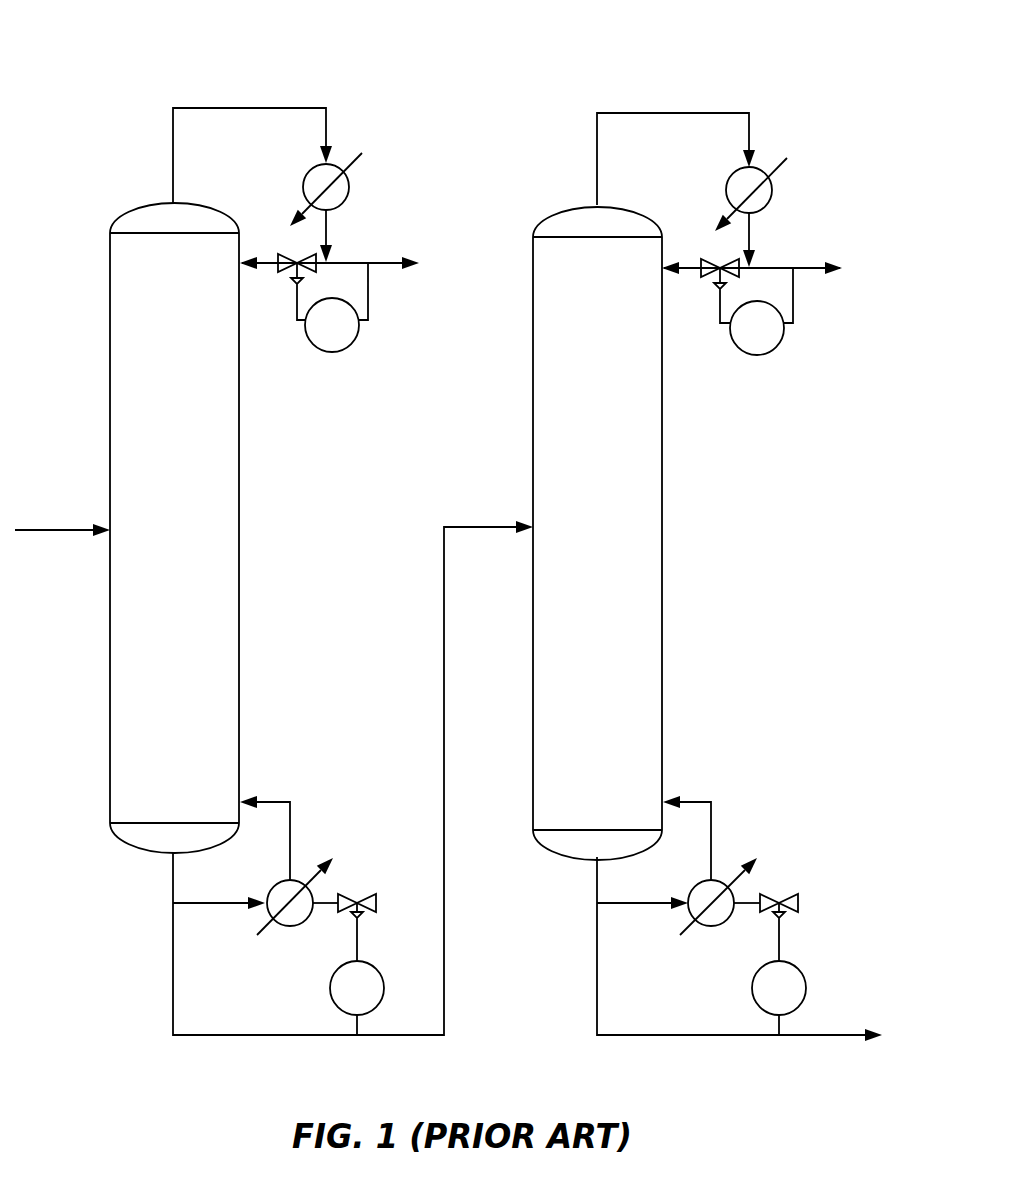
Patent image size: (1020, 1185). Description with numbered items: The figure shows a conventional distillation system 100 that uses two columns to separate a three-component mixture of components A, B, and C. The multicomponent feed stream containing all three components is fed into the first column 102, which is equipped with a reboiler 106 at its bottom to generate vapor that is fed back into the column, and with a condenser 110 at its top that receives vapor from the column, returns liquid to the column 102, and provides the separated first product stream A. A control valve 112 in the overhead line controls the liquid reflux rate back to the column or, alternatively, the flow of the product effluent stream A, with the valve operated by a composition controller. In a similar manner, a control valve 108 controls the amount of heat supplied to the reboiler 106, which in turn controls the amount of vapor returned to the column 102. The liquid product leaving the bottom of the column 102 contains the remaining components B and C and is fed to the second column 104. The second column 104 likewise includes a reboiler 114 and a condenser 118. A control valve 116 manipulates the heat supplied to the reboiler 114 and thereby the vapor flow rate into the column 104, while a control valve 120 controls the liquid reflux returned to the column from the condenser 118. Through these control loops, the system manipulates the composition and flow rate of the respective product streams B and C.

The conventional distillation system 100 is at (199, 41).
The first column 102 is at (239, 528).
The second column 104 is at (662, 540).
The reboiler 106 is at (290, 926).
The control valve 108 is at (357, 893).
The condenser 110 is at (349, 203).
The control valve 112 is at (290, 247).
The reboiler 114 is at (718, 926).
The control valve 116 is at (779, 893).
The condenser 118 is at (777, 200).
The control valve 120 is at (720, 266).